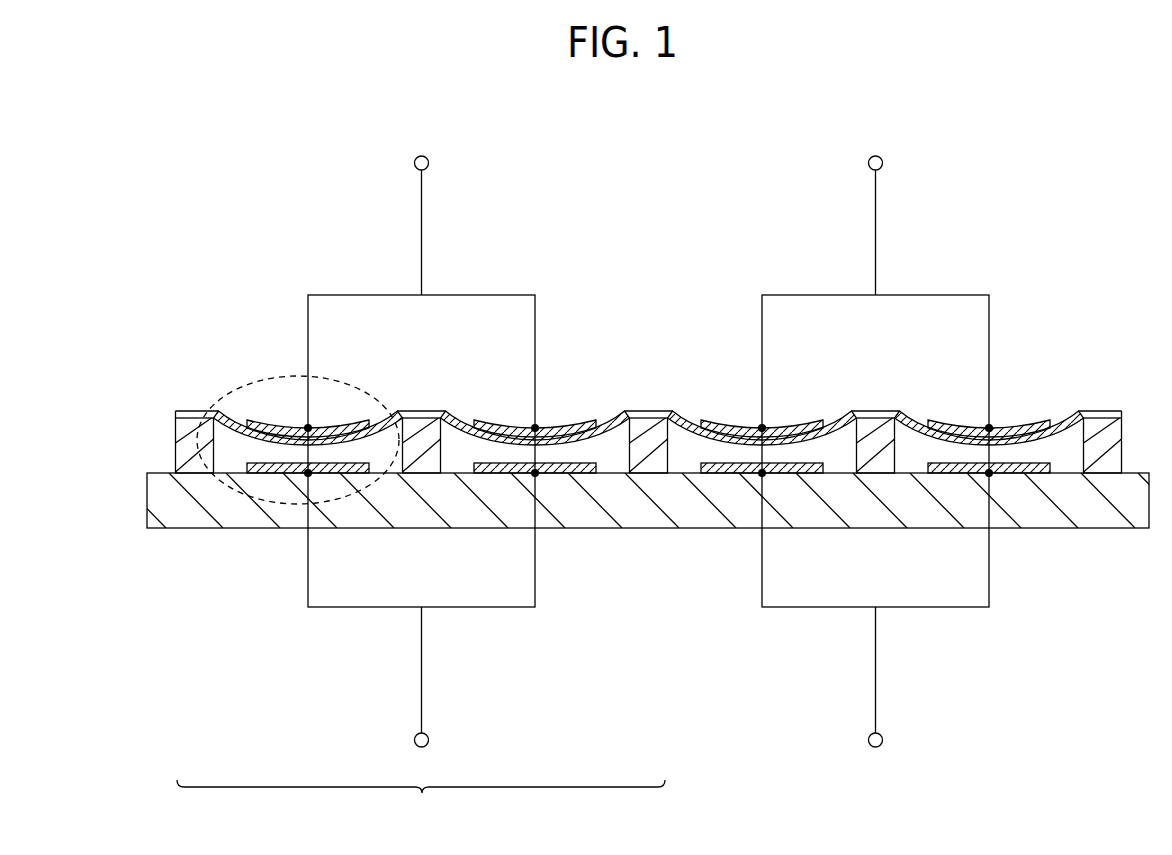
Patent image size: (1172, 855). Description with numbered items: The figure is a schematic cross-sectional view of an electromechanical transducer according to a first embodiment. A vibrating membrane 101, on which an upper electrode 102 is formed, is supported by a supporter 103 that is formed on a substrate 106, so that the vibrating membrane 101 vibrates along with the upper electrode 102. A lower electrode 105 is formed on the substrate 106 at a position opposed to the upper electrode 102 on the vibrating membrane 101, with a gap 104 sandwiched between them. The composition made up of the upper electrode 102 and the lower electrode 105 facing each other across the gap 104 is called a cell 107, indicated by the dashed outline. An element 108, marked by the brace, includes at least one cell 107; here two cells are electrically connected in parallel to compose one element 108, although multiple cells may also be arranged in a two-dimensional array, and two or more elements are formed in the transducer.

The vibrating membrane 101 is at (195, 414).
The upper electrode 102 is at (272, 427).
The supporter 103 is at (177, 434).
The gap 104 is at (370, 452).
The lower electrode 105 is at (277, 474).
The substrate 106 is at (180, 517).
The cell 107 is at (293, 375).
The element 108 is at (421, 804).